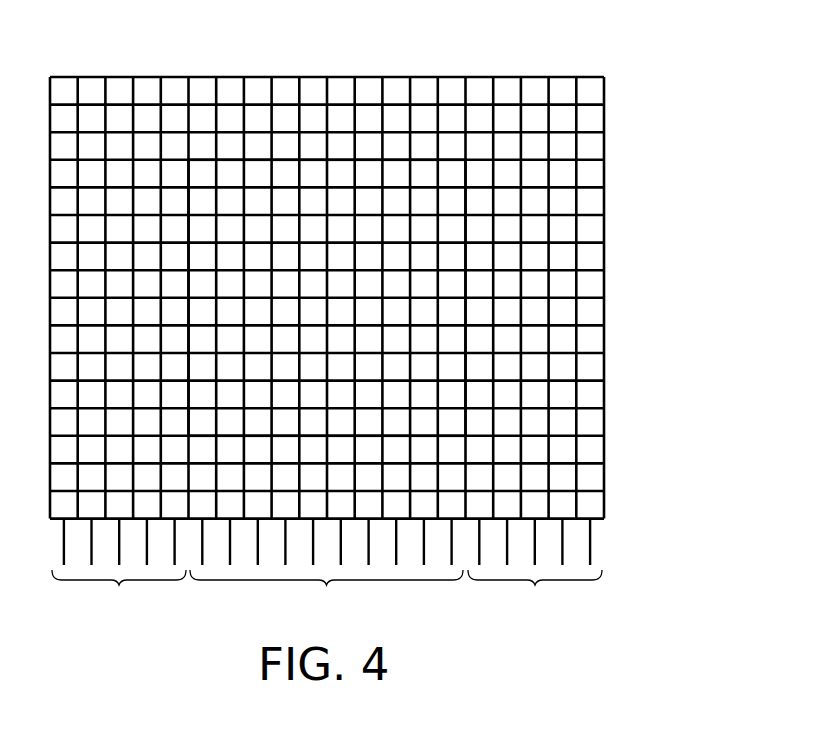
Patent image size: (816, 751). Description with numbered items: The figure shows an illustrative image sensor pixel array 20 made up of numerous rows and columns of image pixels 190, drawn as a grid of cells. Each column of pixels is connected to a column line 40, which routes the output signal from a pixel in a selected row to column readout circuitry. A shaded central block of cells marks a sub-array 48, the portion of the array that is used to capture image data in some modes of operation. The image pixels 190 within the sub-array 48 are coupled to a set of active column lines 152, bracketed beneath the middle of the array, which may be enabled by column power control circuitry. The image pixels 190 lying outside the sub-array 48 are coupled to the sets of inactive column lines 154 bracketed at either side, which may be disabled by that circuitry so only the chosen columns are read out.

The pixel array 20 is at (543, 50).
The image pixel 190 is at (145, 83).
The sub-array 48 is at (467, 230).
The column line 40 is at (62, 543).
The inactive column lines 154 is at (327, 590).
The active column lines 152 is at (326, 590).